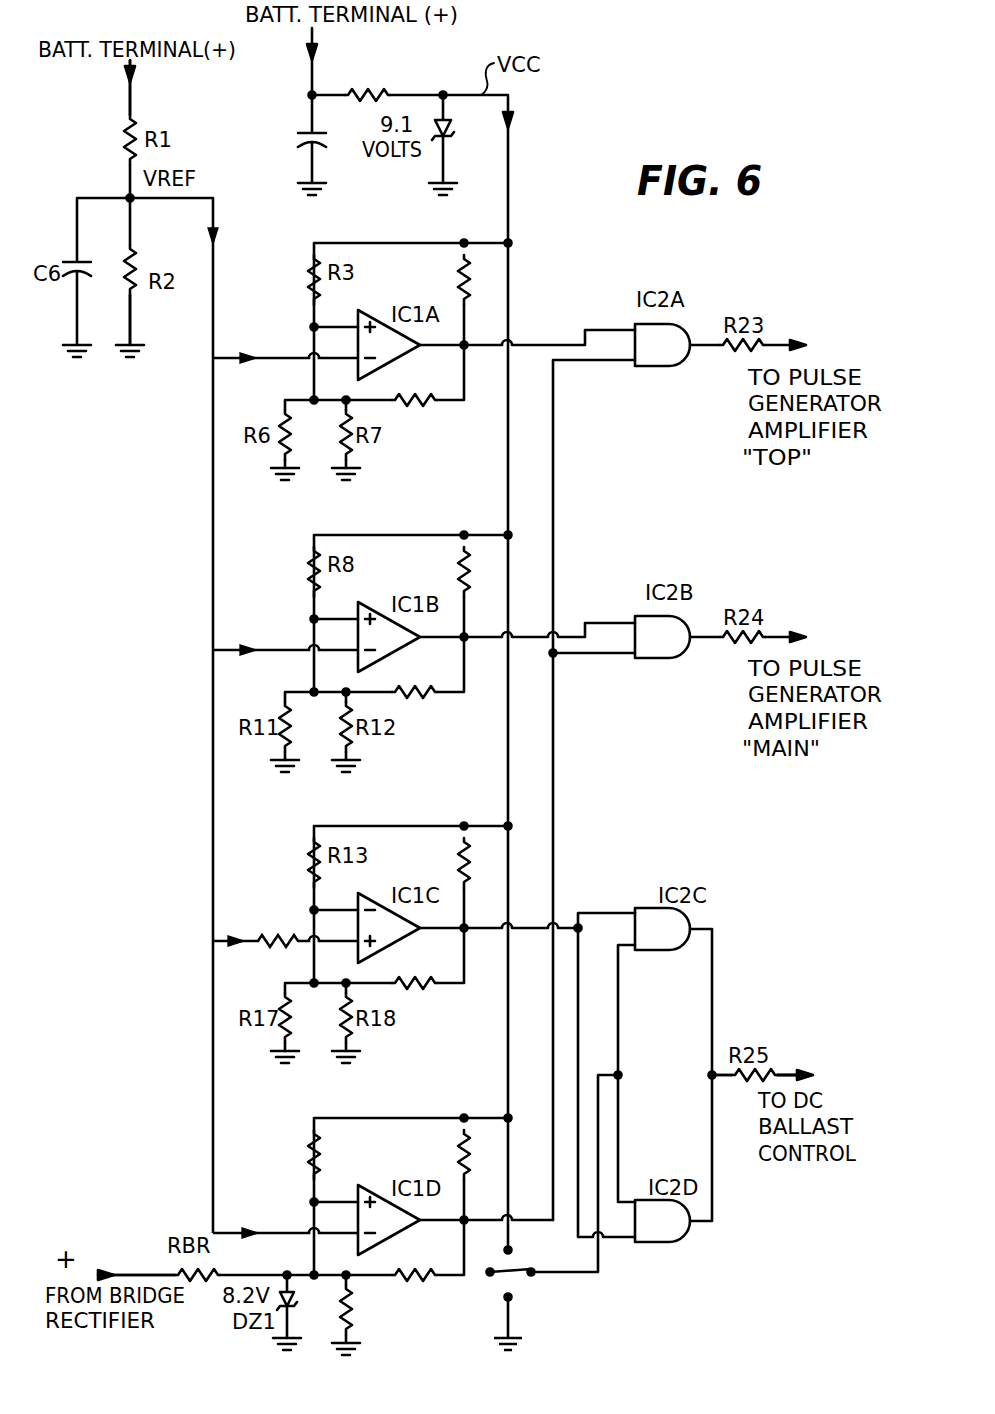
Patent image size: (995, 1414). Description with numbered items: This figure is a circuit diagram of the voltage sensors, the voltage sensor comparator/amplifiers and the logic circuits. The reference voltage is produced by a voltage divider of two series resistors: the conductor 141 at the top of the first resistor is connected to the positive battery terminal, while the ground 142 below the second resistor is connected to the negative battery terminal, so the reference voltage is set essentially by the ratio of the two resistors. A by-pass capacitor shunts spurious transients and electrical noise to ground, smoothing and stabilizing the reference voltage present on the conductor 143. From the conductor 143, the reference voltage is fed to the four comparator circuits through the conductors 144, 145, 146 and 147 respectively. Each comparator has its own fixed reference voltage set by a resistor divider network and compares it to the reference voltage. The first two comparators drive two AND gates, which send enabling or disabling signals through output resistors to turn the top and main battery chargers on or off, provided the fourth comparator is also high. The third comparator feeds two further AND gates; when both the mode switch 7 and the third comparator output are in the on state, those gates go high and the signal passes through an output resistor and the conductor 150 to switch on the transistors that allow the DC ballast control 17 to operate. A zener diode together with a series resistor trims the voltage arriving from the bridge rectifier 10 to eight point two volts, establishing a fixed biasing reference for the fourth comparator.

The conductor 141 is at (129, 108).
The ground 142 is at (141, 351).
The conductor 143 is at (213, 424).
The conductor 144 is at (291, 358).
The conductor 145 is at (290, 650).
The conductor 146 is at (223, 940).
The conductor 147 is at (243, 1225).
The conductor 150 is at (792, 1074).
The mode switch 7 is at (493, 1280).
The rectifier 10 is at (110, 1317).
The DC ballast control 17 is at (779, 1134).